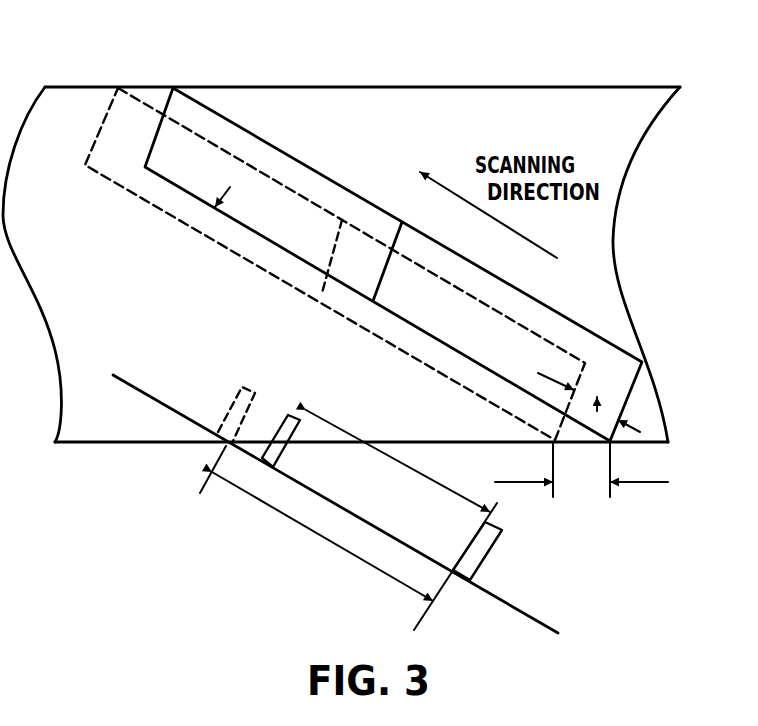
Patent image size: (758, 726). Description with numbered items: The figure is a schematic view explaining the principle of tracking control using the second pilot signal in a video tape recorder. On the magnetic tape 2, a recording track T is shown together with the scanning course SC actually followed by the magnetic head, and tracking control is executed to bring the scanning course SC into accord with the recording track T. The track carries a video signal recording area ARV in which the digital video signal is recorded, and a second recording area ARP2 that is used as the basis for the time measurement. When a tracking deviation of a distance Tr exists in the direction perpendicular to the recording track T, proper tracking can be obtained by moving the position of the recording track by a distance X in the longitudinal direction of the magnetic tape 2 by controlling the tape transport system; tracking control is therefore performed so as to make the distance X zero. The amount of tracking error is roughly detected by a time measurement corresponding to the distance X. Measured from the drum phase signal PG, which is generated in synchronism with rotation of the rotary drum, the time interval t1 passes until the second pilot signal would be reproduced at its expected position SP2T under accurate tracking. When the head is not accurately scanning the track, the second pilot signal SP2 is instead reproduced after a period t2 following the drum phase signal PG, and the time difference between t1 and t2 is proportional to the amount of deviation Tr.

The magnetic tape 2 is at (537, 87).
The scanning course SC is at (555, 312).
The video signal recording area ARV is at (160, 188).
The tracking deviation distance Tr is at (200, 233).
The recording track T is at (403, 352).
The second recording area ARP2 is at (322, 293).
The drum phase signal PG is at (490, 552).
The second pilot signal target position SP2T is at (238, 388).
The second pilot signal SP2 is at (300, 413).
The time interval t1 is at (412, 467).
The time period t2 is at (318, 535).
The distance X is at (581, 470).